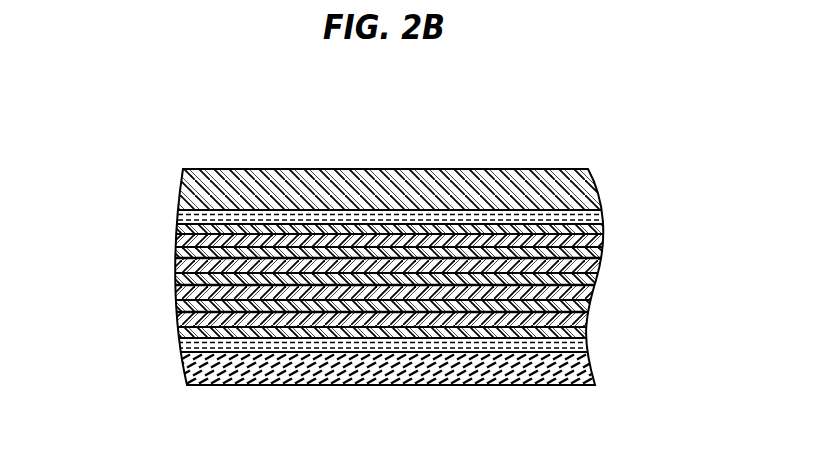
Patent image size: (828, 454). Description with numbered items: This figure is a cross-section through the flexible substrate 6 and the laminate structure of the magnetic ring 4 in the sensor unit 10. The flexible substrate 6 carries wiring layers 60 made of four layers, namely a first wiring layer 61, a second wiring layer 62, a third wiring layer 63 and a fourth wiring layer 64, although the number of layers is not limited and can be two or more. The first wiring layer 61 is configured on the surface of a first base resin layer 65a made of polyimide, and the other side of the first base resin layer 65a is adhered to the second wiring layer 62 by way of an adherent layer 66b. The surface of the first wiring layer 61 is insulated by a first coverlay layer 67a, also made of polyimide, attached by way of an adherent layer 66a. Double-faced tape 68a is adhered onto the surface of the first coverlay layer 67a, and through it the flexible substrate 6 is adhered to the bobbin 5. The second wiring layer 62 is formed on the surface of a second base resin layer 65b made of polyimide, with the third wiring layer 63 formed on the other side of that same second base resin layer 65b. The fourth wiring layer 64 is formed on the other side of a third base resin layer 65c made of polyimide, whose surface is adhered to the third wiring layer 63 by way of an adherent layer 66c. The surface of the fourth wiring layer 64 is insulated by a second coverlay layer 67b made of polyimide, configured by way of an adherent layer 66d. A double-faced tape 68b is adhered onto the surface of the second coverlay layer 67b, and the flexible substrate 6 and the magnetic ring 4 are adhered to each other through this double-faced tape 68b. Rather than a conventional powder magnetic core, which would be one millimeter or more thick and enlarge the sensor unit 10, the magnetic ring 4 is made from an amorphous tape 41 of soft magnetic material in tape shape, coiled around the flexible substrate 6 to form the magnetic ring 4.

The sensor unit 10 is at (164, 137).
The bobbin 5 is at (589, 168).
The double-faced tape 68a is at (598, 217).
The first coverlay layer 67a is at (195, 227).
The wiring layers 60 is at (415, 281).
The first wiring layer 61 is at (603, 240).
The first base resin layer 65a is at (193, 251).
The second wiring layer 62 is at (600, 267).
The second base resin layer 65b is at (188, 278).
The third wiring layer 63 is at (591, 293).
The third base resin layer 65c is at (186, 308).
The fourth wiring layer 64 is at (414, 321).
The adherent layer 66a is at (373, 232).
The adherent layer 66b is at (422, 259).
The adherent layer 66c is at (475, 300).
The adherent layer 66d is at (528, 328).
The second coverlay layer 67b is at (186, 333).
The double-faced tape 68b is at (588, 344).
The flexible substrate 6 is at (379, 374).
The magnetic ring 4 is at (598, 366).
The amorphous tape 41 is at (580, 384).